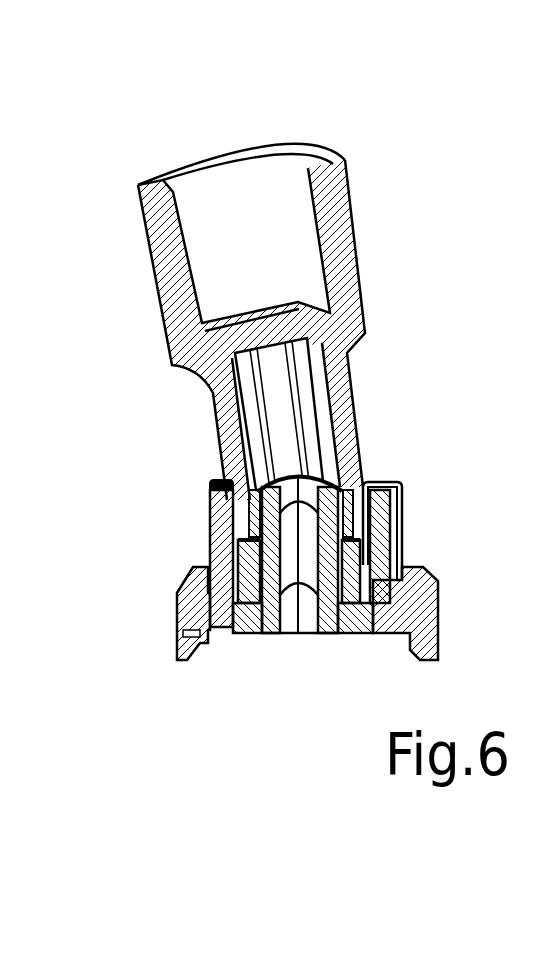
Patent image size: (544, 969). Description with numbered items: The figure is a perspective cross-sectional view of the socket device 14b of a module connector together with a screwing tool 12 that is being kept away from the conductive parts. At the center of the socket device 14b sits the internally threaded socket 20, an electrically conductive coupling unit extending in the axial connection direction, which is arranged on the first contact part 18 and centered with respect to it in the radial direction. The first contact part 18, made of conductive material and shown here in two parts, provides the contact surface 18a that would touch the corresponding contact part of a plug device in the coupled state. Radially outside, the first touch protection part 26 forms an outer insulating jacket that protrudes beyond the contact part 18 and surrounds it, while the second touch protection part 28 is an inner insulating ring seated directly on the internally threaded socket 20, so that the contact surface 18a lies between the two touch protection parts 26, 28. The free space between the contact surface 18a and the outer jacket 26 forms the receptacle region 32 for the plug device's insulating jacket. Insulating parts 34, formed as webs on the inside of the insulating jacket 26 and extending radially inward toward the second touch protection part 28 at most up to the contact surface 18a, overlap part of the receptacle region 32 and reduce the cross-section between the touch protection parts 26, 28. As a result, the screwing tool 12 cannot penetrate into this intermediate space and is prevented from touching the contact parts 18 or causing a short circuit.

The screwing tool 12 is at (273, 140).
The socket device 14b is at (303, 563).
The first contact part 18 is at (228, 558).
The contact surface 18a is at (376, 481).
The internally threaded socket 20 is at (280, 597).
The first touch protection part 26 is at (405, 558).
The second touch protection part 28 is at (340, 476).
The receptacle region 32 is at (232, 577).
The insulating parts 34 is at (207, 512).